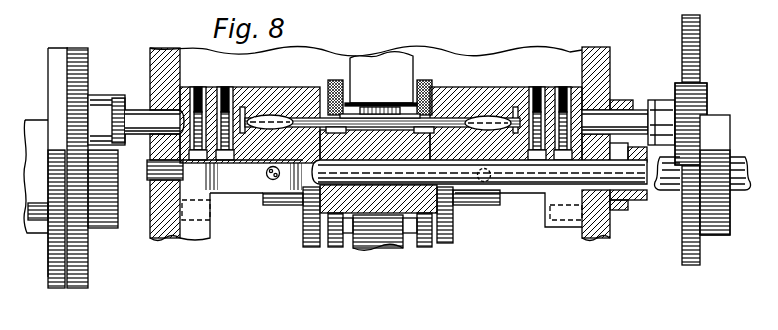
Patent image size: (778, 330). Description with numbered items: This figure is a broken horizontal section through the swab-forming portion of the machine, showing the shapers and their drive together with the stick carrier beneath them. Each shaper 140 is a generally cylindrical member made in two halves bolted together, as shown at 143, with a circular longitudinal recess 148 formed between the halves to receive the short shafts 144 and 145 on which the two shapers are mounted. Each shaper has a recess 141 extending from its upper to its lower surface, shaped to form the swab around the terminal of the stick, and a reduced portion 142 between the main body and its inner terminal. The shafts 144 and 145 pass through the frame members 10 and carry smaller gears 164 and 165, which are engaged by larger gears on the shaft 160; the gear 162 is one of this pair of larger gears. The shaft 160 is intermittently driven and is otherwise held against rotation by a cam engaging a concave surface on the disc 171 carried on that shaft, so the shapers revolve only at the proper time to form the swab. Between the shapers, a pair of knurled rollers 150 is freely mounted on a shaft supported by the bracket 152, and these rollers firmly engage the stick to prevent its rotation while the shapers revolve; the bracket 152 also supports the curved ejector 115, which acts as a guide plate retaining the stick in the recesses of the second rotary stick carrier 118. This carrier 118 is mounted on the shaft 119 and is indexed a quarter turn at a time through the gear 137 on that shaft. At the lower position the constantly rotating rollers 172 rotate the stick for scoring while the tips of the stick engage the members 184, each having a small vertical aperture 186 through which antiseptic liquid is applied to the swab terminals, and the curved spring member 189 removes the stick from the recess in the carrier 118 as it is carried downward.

The frame member 10 is at (170, 50).
The ejector 115 is at (396, 106).
The second rotary stick carrier 118 is at (378, 207).
The shaft 119 is at (533, 181).
The gear 137 is at (637, 207).
The shaper 140 is at (287, 85).
The recess 141 is at (301, 114).
The reduced portion 142 is at (454, 87).
The bolt 143 is at (197, 87).
The short shaft 144 is at (133, 110).
The short shaft 145 is at (633, 113).
The circular longitudinal recess 148 is at (229, 87).
The knurled rollers 150 is at (348, 91).
The bracket 152 is at (363, 103).
The shaft 160 is at (132, 200).
The larger gear 162 is at (77, 48).
The smaller gear 164 is at (94, 92).
The smaller gear 165 is at (707, 95).
The disc 171 is at (55, 288).
The rollers 172 is at (430, 246).
The members 184 is at (245, 191).
The vertical aperture 186 is at (270, 182).
The curved spring member 189 is at (394, 244).